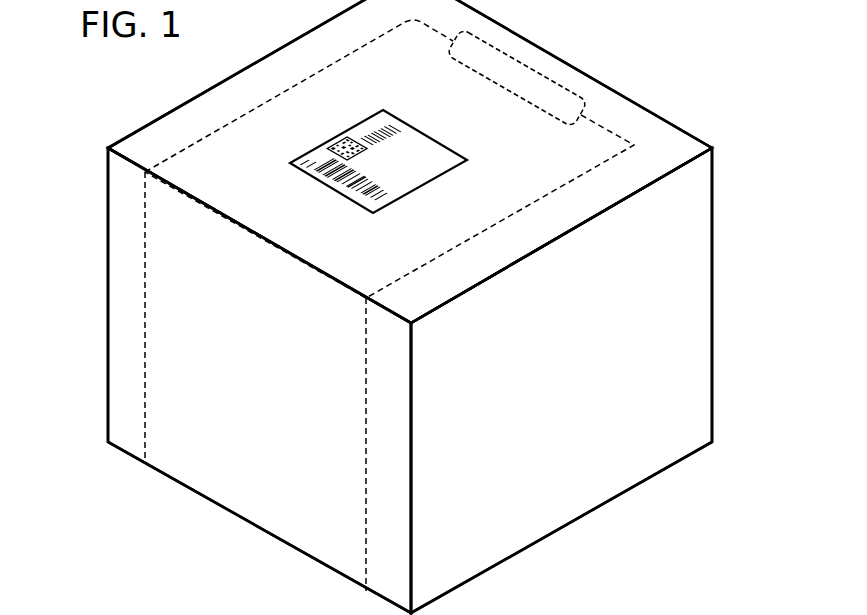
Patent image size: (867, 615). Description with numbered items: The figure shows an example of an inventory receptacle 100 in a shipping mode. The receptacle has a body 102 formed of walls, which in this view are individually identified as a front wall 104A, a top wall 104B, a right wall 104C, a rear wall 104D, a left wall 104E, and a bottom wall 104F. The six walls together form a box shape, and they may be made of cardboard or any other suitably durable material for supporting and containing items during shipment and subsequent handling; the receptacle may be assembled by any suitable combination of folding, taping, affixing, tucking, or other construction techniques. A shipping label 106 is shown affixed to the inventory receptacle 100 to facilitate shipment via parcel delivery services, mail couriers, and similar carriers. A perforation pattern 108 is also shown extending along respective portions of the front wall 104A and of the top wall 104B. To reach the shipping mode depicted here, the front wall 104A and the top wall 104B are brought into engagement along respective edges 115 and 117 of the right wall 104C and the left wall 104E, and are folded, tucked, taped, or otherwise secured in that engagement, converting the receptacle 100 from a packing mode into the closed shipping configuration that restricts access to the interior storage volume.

The inventory receptacle 100 is at (634, 52).
The body 102 is at (667, 300).
The front wall 104A is at (108, 200).
The top wall 104B is at (200, 107).
The right wall 104C is at (517, 533).
The rear wall 104D is at (668, 212).
The left wall 104E is at (140, 375).
The bottom wall 104F is at (548, 492).
The shipping label 106 is at (437, 141).
The perforation pattern 108 is at (366, 480).
The edge 115 is at (490, 278).
The edge 117 is at (292, 40).